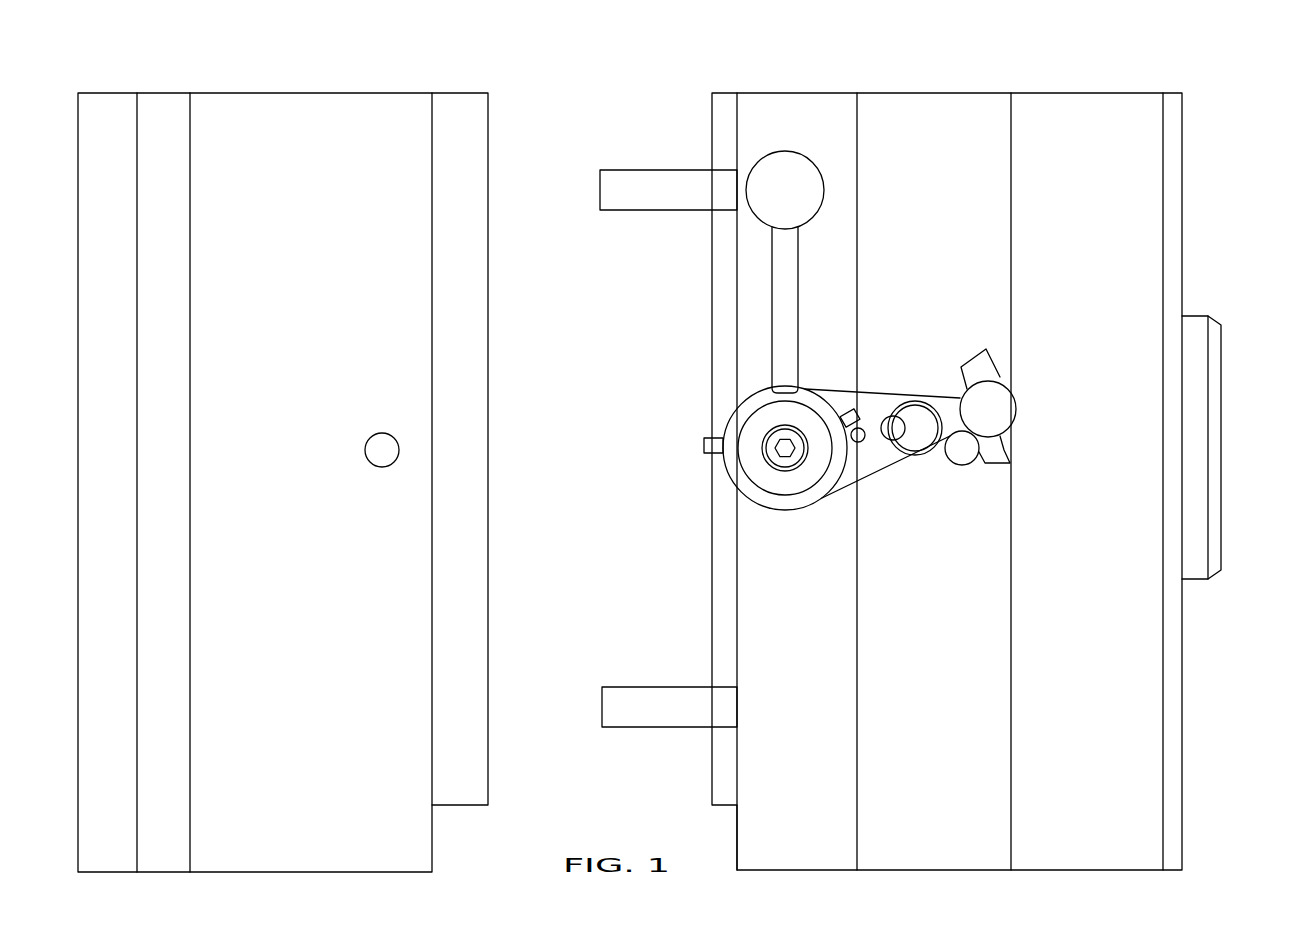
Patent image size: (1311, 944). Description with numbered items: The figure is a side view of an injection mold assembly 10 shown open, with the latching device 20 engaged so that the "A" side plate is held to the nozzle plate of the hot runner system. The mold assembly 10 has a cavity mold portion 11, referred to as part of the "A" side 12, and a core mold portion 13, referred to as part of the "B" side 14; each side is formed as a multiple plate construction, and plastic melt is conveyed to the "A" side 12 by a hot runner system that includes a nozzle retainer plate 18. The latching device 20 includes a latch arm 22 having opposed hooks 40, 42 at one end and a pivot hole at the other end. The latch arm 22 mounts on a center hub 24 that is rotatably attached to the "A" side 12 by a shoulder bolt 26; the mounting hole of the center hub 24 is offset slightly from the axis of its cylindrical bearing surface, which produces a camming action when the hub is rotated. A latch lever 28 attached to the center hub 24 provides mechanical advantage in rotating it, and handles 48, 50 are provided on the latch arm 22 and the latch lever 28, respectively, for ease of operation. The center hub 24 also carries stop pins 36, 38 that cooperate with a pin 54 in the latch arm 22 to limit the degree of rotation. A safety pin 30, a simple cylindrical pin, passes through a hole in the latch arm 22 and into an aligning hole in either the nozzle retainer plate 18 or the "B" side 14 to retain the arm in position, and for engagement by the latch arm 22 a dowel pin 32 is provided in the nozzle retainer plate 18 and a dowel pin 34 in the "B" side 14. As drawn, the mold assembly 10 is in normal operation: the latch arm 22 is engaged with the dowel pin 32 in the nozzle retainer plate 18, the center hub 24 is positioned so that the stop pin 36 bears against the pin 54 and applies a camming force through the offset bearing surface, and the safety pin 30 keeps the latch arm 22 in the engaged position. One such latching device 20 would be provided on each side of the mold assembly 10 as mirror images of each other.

The mold assembly 10 is at (949, 451).
The cavity mold portion 11 is at (727, 137).
The "A" side 12 is at (1182, 79).
The core mold portion 13 is at (449, 151).
The "B" side 14 is at (78, 79).
The nozzle retainer plate 18 is at (947, 164).
The latching device 20 is at (847, 355).
The latch arm 22 is at (873, 463).
The center hub 24 is at (807, 501).
The shoulder bolt 26 is at (775, 460).
The latch lever 28 is at (797, 283).
The safety pin 30 is at (891, 426).
The dowel pin 32 is at (958, 458).
The dowel pin 34 is at (378, 444).
The stop pin 36 is at (870, 390).
The stop pin 38 is at (708, 454).
The hook 40 is at (1000, 461).
The hook 42 is at (980, 365).
The handle 48 is at (1000, 408).
The handle 50 is at (800, 180).
The pin 54 is at (858, 487).